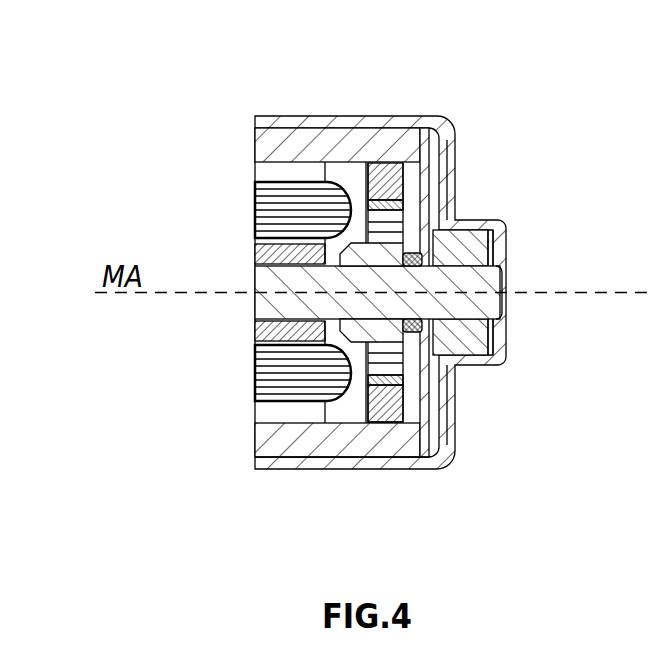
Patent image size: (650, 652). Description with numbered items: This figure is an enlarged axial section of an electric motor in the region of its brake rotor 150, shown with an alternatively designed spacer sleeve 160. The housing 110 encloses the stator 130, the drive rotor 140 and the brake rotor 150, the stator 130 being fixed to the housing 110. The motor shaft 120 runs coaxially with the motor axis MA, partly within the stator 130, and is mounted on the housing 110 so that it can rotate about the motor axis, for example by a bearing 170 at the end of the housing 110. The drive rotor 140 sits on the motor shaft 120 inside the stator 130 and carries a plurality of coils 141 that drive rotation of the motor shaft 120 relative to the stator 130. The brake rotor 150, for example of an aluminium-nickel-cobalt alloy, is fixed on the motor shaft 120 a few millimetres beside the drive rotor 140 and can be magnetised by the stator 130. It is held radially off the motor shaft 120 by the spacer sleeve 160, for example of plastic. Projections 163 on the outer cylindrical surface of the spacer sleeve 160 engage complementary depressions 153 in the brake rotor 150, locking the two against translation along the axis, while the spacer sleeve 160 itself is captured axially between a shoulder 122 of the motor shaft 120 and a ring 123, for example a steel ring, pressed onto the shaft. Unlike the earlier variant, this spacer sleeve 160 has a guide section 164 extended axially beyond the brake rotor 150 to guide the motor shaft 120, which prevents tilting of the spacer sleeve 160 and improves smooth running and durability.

The housing 110 is at (262, 120).
The motor shaft 120 is at (262, 322).
The shoulder 122 is at (358, 265).
The ring 123 is at (420, 332).
The stator 130 is at (257, 456).
The drive rotor 140 is at (265, 163).
The coils 141 is at (274, 184).
The brake rotor 150 is at (387, 424).
The depressions 153 is at (364, 188).
The spacer sleeve 160 is at (403, 208).
The projections 163 is at (372, 192).
The guide section 164 is at (340, 324).
The bearing 170 is at (465, 240).